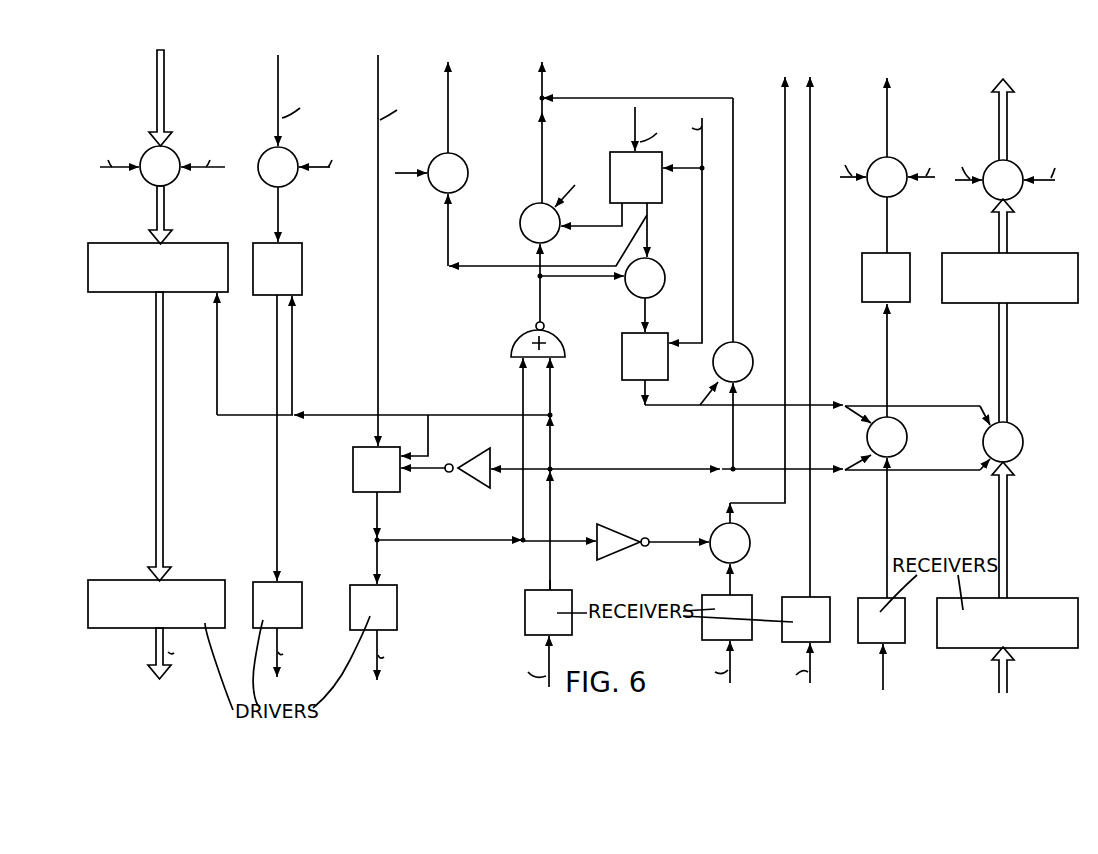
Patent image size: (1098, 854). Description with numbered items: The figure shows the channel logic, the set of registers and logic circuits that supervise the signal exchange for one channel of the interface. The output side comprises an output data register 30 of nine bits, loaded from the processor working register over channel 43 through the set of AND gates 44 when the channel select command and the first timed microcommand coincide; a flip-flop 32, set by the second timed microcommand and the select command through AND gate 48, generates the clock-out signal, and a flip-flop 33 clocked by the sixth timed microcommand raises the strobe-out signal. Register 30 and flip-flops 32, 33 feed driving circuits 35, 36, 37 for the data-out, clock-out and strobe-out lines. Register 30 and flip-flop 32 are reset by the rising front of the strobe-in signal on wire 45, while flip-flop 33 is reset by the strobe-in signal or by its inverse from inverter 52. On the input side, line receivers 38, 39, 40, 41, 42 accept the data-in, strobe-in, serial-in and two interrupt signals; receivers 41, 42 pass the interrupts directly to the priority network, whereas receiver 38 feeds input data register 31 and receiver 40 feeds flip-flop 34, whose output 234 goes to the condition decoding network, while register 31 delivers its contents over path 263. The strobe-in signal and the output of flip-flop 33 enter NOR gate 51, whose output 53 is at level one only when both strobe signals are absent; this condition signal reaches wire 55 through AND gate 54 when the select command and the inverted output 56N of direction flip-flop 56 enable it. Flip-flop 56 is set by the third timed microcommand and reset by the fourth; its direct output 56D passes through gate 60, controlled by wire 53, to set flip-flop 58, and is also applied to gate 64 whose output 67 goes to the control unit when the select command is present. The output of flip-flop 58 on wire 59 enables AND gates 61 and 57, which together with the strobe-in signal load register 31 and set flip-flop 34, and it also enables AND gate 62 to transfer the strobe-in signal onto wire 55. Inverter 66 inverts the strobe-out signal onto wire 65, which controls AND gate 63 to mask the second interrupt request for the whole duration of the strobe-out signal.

The output data register 30 is at (142, 296).
The input data register 31 is at (1063, 304).
The flip-flop 32 is at (302, 272).
The flip-flop 33 is at (353, 465).
The flip-flop 34 is at (908, 303).
The driving circuit 35 is at (188, 578).
The driving circuit 36 is at (302, 590).
The driving circuit 37 is at (397, 590).
The line receiver 38 is at (1033, 598).
The line receiver 39 is at (524, 604).
The line receiver 40 is at (866, 603).
The line receiver 41 is at (785, 603).
The line receiver 42 is at (702, 606).
The channel 43 is at (166, 95).
The AND gates 44 is at (148, 183).
The wire 45 is at (362, 414).
The AND gate 48 is at (267, 190).
The NOR gate 51 is at (511, 340).
The inverter 52 is at (470, 488).
The output of NOR gate 53 is at (539, 300).
The AND gate 54 is at (518, 228).
The wire 55 is at (540, 150).
The flip-flop 56 is at (610, 164).
The inverted output 56N is at (623, 232).
The direct output 56D is at (649, 232).
The AND gate 57 is at (907, 440).
The flip-flop 58 is at (620, 384).
The wire 59 is at (688, 407).
The AND gate 60 is at (665, 276).
The AND gate 61 is at (1024, 440).
The AND gate 62 is at (749, 362).
The AND gate 63 is at (750, 548).
The gate 64 is at (468, 173).
The wire 65 is at (667, 547).
The inverter 66 is at (586, 554).
The output of gate 67 is at (452, 97).
The output of flip-flop 234 is at (893, 100).
The path 263 is at (1010, 118).